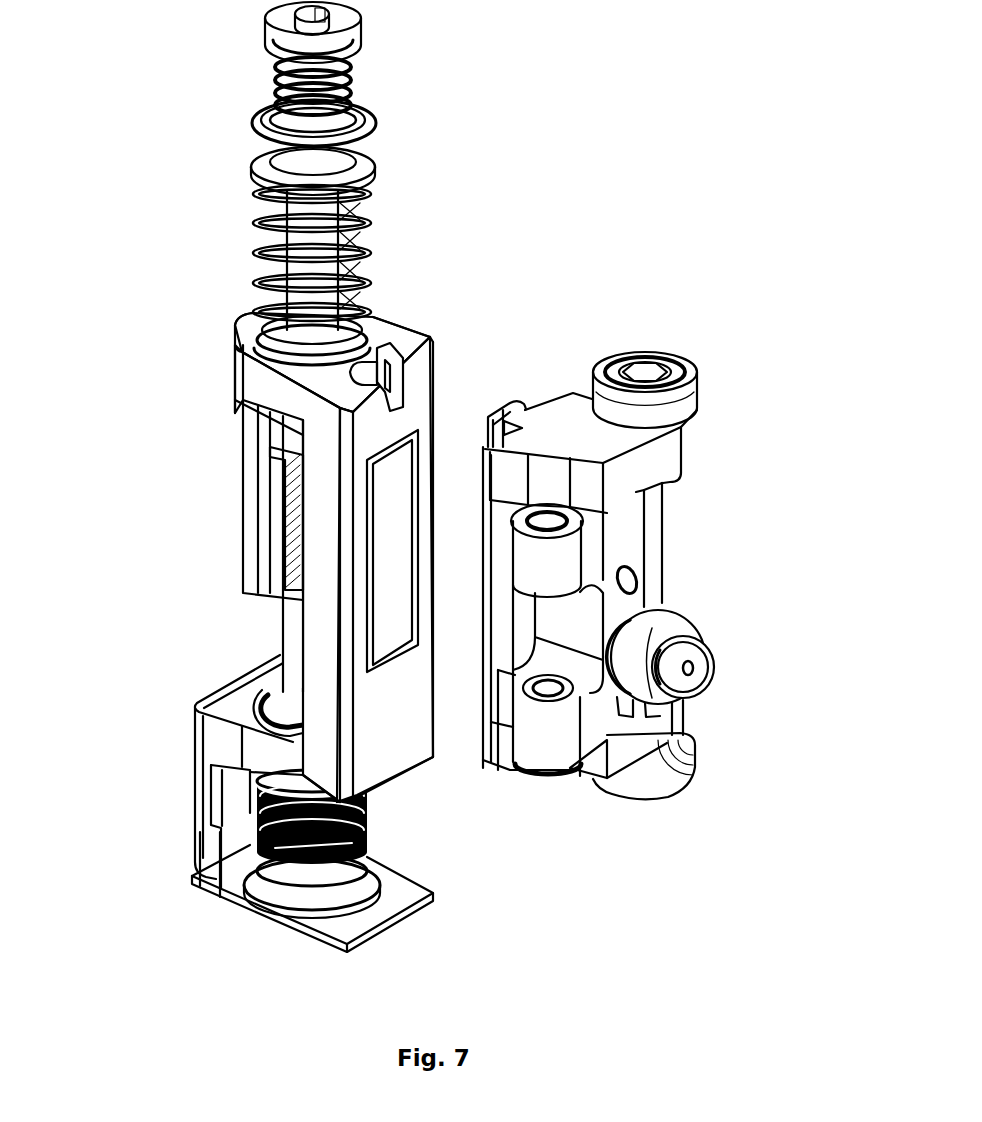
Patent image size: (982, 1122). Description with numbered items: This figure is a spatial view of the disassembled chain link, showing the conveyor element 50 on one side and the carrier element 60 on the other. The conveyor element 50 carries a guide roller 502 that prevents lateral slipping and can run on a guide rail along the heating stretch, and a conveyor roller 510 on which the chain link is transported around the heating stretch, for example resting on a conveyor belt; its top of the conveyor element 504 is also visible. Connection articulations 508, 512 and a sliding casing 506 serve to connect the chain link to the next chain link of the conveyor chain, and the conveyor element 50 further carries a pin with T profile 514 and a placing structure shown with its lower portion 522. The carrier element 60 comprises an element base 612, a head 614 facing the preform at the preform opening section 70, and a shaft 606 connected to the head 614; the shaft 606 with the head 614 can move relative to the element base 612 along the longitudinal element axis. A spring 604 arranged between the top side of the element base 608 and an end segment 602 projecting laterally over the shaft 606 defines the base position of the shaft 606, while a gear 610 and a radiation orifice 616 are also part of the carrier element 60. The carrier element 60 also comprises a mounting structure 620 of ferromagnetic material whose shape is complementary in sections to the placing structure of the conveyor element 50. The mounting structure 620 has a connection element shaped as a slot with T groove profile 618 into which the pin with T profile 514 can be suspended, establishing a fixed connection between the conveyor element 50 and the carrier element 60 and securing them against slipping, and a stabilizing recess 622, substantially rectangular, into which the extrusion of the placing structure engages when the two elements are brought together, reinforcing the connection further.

The carrier element 60 is at (208, 384).
The end segment 602 is at (252, 147).
The spring 604 is at (253, 220).
The shaft 606 is at (298, 267).
The top side of the element base 608 is at (247, 332).
The gear 610 is at (253, 547).
The element base 612 is at (325, 768).
The head 614 is at (378, 803).
The radiation orifice 616 is at (400, 882).
The slot with T groove profile 618 is at (387, 360).
The mounting structure 620 is at (418, 397).
The recess 622 is at (390, 520).
The preform opening section 70 is at (437, 897).
The conveyor element 50 is at (716, 502).
The guide roller 502 is at (645, 413).
The top of the conveyor element 504 is at (570, 440).
The sliding casing 506 is at (603, 523).
The connection articulation 508 is at (553, 570).
The conveyor roller 510 is at (650, 630).
The connection articulation 512 is at (548, 733).
The pin with T profile 514 is at (520, 400).
The foot 522 is at (653, 787).